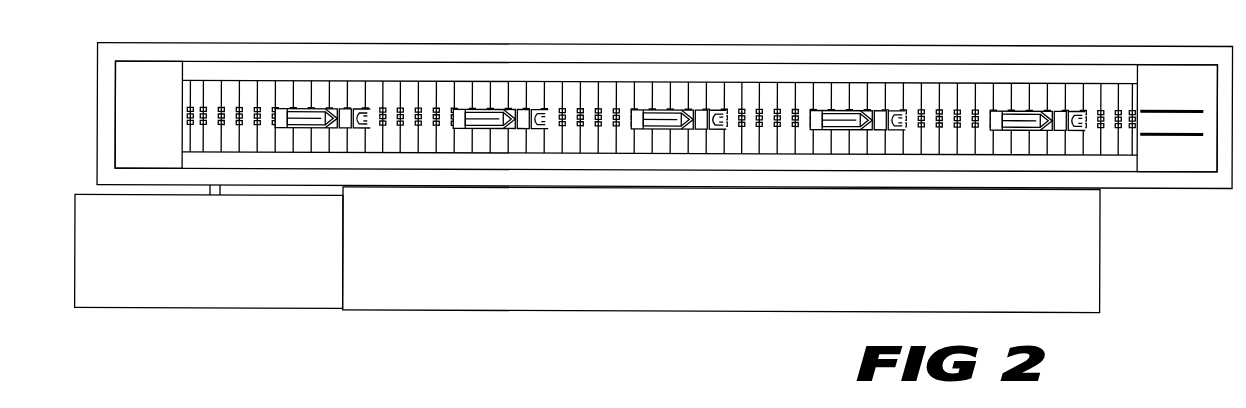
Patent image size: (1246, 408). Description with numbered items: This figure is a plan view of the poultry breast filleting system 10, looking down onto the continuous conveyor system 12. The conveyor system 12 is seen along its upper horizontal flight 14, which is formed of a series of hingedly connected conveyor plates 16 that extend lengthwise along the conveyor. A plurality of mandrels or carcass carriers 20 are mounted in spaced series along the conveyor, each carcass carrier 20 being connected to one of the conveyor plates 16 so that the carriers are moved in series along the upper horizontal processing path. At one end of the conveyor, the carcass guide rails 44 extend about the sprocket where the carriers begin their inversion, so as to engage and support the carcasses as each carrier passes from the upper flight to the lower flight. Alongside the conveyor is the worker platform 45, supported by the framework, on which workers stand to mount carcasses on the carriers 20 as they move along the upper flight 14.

The poultry breast filleting system 10 is at (1142, 247).
The continuous conveyor system 12 is at (772, 83).
The upper horizontal flight 14 is at (857, 83).
The conveyor plates 16 is at (603, 93).
The carcass carriers 20 is at (307, 115).
The carcass guide rails 44 is at (1152, 131).
The worker platform 45 is at (563, 303).